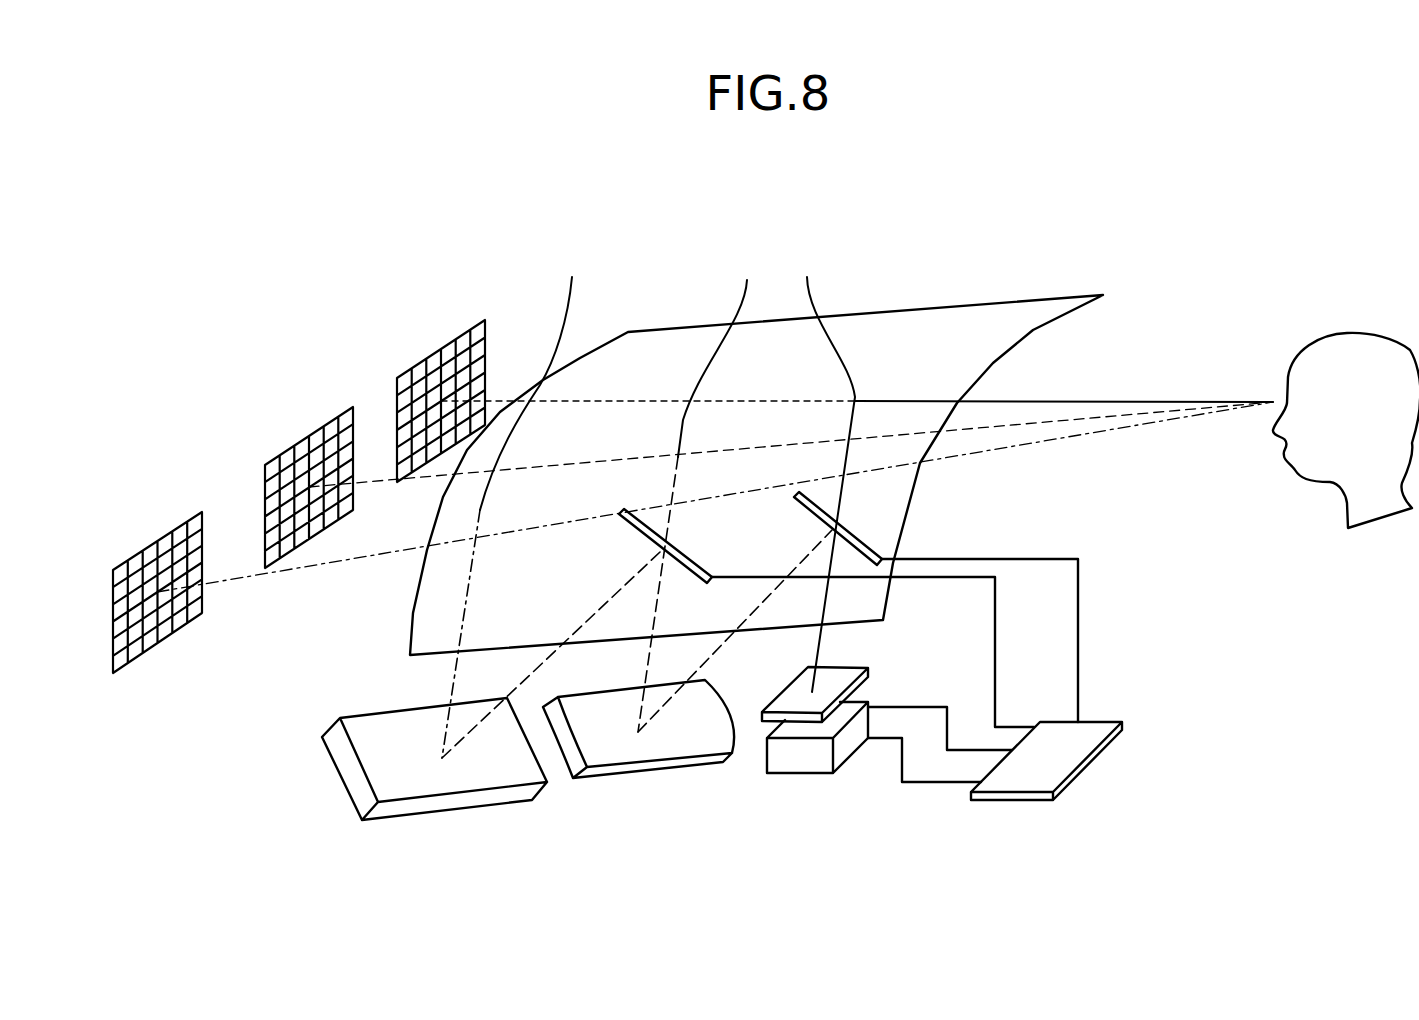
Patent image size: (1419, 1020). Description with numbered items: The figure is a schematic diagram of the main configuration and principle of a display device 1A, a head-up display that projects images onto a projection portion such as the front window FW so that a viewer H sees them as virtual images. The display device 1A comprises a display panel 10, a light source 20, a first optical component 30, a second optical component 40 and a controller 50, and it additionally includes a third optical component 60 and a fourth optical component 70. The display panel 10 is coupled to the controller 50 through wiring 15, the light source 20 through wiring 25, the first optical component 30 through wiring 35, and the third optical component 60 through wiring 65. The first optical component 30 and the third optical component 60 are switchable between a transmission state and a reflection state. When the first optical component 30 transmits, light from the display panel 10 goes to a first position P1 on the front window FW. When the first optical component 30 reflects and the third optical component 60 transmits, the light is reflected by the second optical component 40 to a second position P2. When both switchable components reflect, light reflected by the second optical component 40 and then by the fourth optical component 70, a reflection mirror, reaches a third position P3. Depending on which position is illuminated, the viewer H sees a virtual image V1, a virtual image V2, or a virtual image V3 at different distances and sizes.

The display device 1A is at (592, 205).
The front window FW is at (1030, 298).
The viewer (driver) head H is at (1381, 333).
The virtual image V1 is at (455, 338).
The virtual image V2 is at (336, 418).
The virtual image V3 is at (187, 520).
The first position P1 is at (825, 472).
The second position P2 is at (698, 492).
The third position P3 is at (512, 507).
The display panel 10 is at (760, 713).
The wiring 15 is at (958, 753).
The light source 20 is at (800, 774).
The wiring 25 is at (907, 783).
The first optical component 30 is at (850, 530).
The wiring 35 is at (1079, 603).
The second optical component 40 is at (597, 779).
The controller 50 is at (1020, 804).
The third optical component 60 is at (688, 560).
The wiring 65 is at (997, 652).
The fourth optical component 70 is at (405, 821).